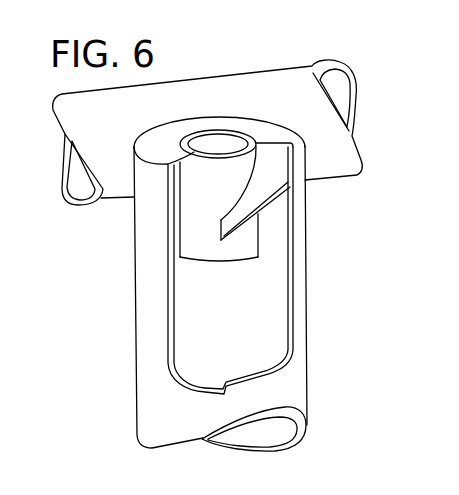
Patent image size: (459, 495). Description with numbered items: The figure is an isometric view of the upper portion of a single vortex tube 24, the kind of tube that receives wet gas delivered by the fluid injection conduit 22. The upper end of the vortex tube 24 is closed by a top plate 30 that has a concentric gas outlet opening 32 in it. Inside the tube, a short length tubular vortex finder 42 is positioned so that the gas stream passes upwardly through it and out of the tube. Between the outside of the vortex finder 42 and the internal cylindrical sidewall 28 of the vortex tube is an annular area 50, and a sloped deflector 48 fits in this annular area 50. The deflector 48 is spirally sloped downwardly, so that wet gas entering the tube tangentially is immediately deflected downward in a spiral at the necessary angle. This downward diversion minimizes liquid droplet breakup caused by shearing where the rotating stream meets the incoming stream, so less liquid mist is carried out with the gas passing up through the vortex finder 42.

The fluid injection conduit 22 is at (207, 82).
The vortex tube 24 is at (152, 323).
The interior sidewall 28 is at (285, 303).
The top plate 30 is at (167, 136).
The gas outlet opening 32 is at (238, 143).
The vortex finder 42 is at (203, 200).
The sloped deflector 48 is at (260, 197).
The annular area 50 is at (177, 245).